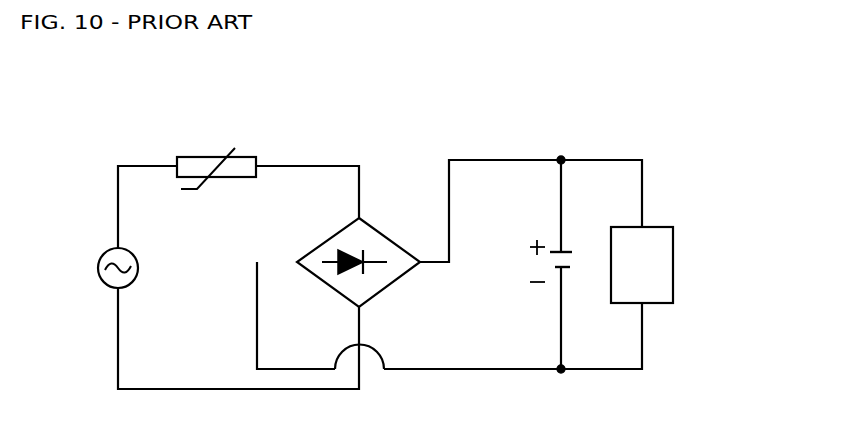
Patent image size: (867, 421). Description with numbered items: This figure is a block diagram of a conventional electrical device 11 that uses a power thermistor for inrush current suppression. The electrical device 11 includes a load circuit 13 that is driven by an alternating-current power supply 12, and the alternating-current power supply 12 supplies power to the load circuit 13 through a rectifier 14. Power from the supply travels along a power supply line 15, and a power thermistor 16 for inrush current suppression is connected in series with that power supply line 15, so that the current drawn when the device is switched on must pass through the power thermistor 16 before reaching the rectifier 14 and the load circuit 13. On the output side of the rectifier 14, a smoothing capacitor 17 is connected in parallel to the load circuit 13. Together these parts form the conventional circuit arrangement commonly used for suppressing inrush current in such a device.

The electrical device 11 is at (455, 86).
The alternating-current power supply 12 is at (135, 252).
The load circuit 13 is at (673, 252).
The rectifier 14 is at (385, 233).
The power supply line 15 is at (318, 166).
The power thermistor 16 is at (193, 157).
The smoothing capacitor 17 is at (570, 260).